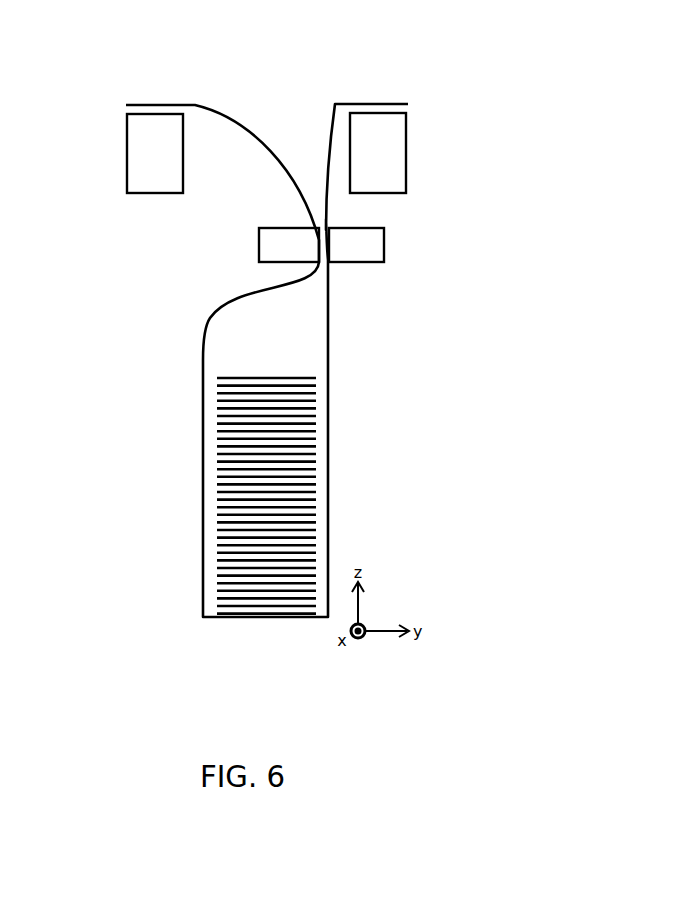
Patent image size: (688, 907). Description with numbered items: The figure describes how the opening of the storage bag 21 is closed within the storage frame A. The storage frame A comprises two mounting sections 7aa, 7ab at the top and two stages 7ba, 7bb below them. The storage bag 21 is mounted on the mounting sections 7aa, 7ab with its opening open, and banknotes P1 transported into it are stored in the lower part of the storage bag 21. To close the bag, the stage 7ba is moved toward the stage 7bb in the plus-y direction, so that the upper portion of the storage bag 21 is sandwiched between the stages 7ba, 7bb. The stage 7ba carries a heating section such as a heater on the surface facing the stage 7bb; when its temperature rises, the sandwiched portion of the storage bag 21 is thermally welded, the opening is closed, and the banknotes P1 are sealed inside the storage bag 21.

The storage frame A is at (311, 72).
The storage bag 21 is at (330, 405).
The banknotes P1 is at (220, 447).
The mounting section 7aa is at (127, 148).
The mounting section 7ab is at (406, 147).
The stage 7ba is at (258, 243).
The stage 7bb is at (384, 240).